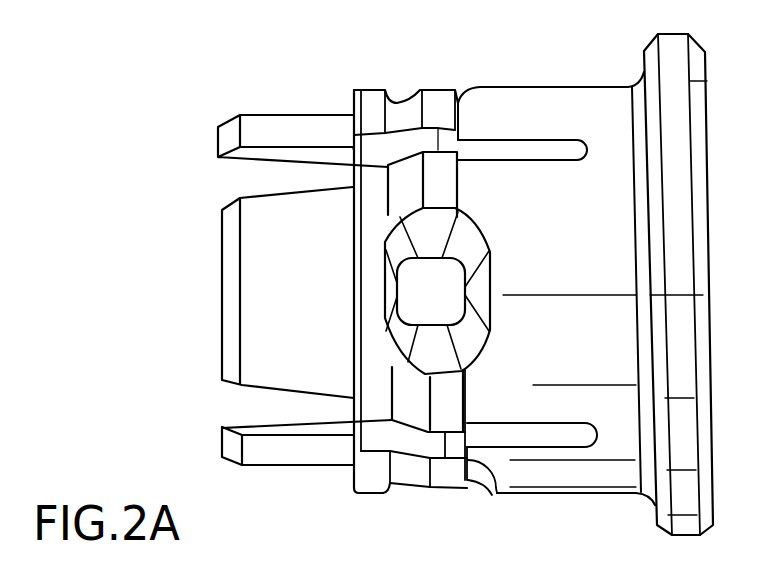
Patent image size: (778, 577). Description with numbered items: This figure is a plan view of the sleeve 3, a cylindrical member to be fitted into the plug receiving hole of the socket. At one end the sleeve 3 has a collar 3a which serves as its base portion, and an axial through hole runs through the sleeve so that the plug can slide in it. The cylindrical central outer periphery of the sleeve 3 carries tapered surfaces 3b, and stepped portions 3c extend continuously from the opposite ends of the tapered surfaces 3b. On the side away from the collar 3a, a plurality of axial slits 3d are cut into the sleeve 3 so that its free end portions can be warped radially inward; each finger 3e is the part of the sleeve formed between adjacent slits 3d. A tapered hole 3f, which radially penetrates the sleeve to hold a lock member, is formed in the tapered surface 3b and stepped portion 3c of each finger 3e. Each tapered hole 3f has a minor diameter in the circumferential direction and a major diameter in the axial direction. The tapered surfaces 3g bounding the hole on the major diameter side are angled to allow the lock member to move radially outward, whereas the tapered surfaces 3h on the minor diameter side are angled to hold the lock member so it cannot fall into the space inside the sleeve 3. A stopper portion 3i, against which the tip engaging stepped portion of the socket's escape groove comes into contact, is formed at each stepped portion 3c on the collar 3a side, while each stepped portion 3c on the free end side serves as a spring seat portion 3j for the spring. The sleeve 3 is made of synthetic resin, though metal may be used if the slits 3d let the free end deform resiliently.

The sleeve 3 is at (548, 107).
The collar 3a is at (673, 92).
The tapered surfaces 3b is at (405, 108).
The stepped portions 3c is at (447, 480).
The slits 3d is at (270, 172).
The finger 3e is at (258, 323).
The tapered hole 3f is at (438, 300).
The tapered surfaces on major diameter side 3g is at (387, 288).
The tapered surfaces on minor diameter side 3h is at (430, 225).
The stopper portion 3i is at (494, 478).
The spring seat portion 3j is at (350, 100).